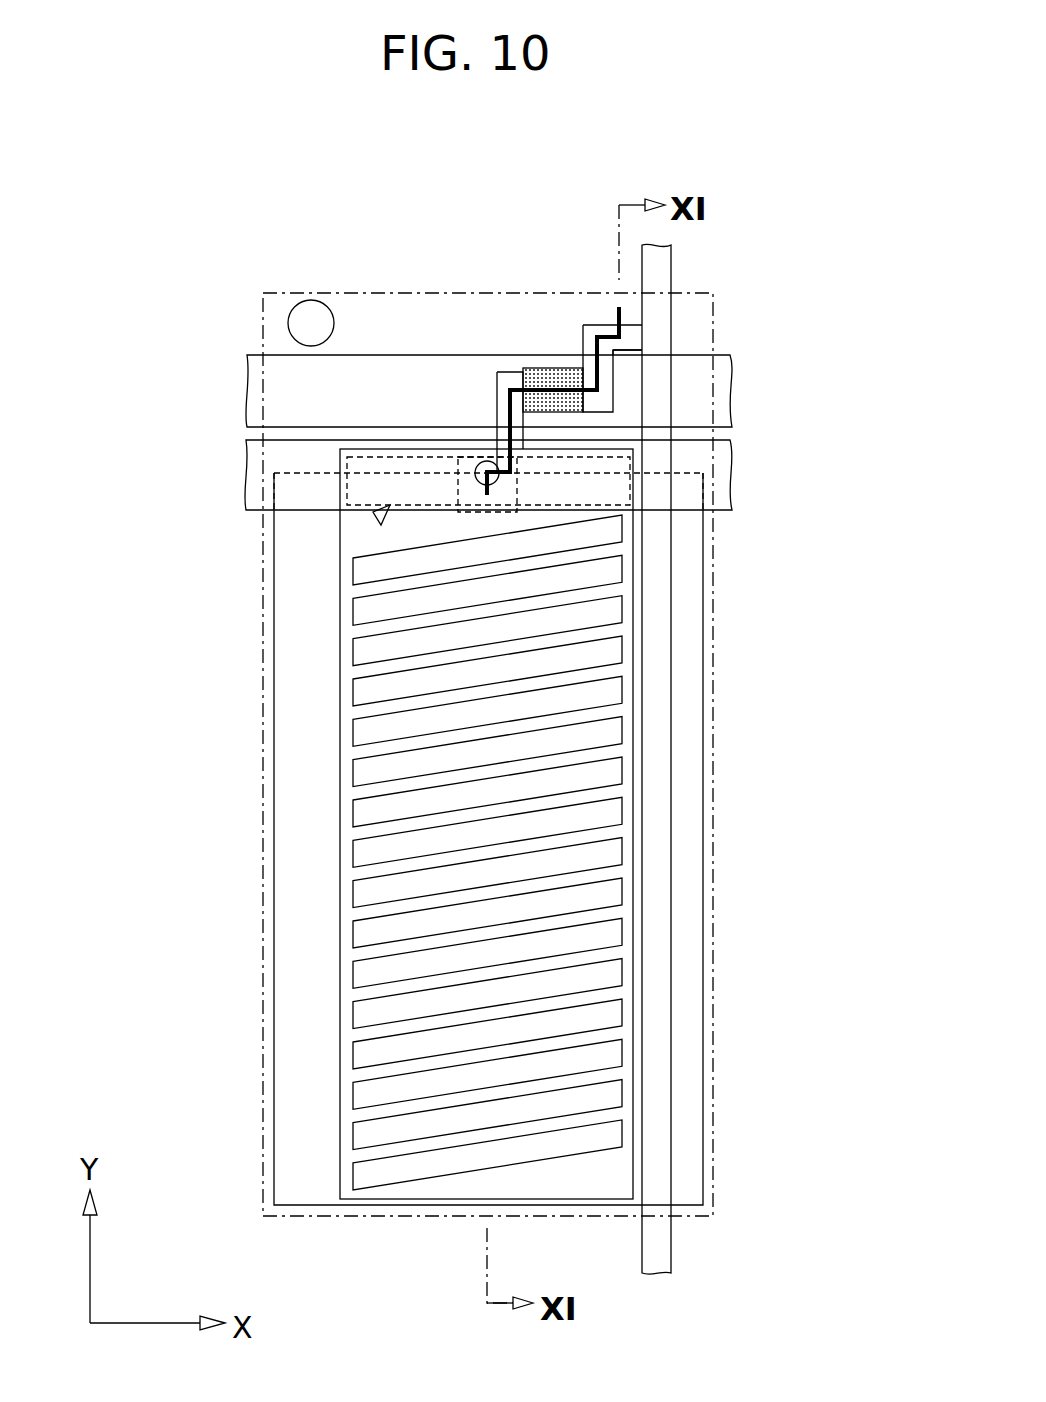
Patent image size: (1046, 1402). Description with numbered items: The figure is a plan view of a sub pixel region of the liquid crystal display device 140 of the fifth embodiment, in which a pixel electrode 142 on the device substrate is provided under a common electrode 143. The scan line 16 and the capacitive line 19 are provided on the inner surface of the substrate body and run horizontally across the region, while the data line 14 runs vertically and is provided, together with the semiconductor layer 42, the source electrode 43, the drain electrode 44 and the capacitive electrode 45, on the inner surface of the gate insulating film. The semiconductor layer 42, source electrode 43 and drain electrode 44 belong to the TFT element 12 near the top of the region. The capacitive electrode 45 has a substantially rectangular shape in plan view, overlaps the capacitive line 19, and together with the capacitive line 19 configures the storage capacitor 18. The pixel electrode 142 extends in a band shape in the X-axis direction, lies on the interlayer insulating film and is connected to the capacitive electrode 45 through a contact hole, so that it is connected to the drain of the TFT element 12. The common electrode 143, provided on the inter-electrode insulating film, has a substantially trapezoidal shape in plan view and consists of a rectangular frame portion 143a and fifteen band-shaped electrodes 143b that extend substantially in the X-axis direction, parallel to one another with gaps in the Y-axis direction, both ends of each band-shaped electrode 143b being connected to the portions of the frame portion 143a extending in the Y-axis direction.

The TFT element 12 is at (585, 205).
The data line 14 is at (665, 1253).
The scan line 16 is at (245, 385).
The storage capacitor 18 is at (375, 520).
The capacitive line 19 is at (246, 480).
The semiconductor layer 42 is at (545, 368).
The source electrode 43 is at (580, 338).
The drain electrode 44 is at (497, 382).
The capacitive electrode 45 is at (340, 470).
The liquid crystal display device 140 is at (795, 216).
The pixel electrode 142 is at (297, 887).
The common electrode 143 is at (130, 670).
The frame portion 143a is at (368, 550).
The band-shaped electrodes 143b is at (417, 747).